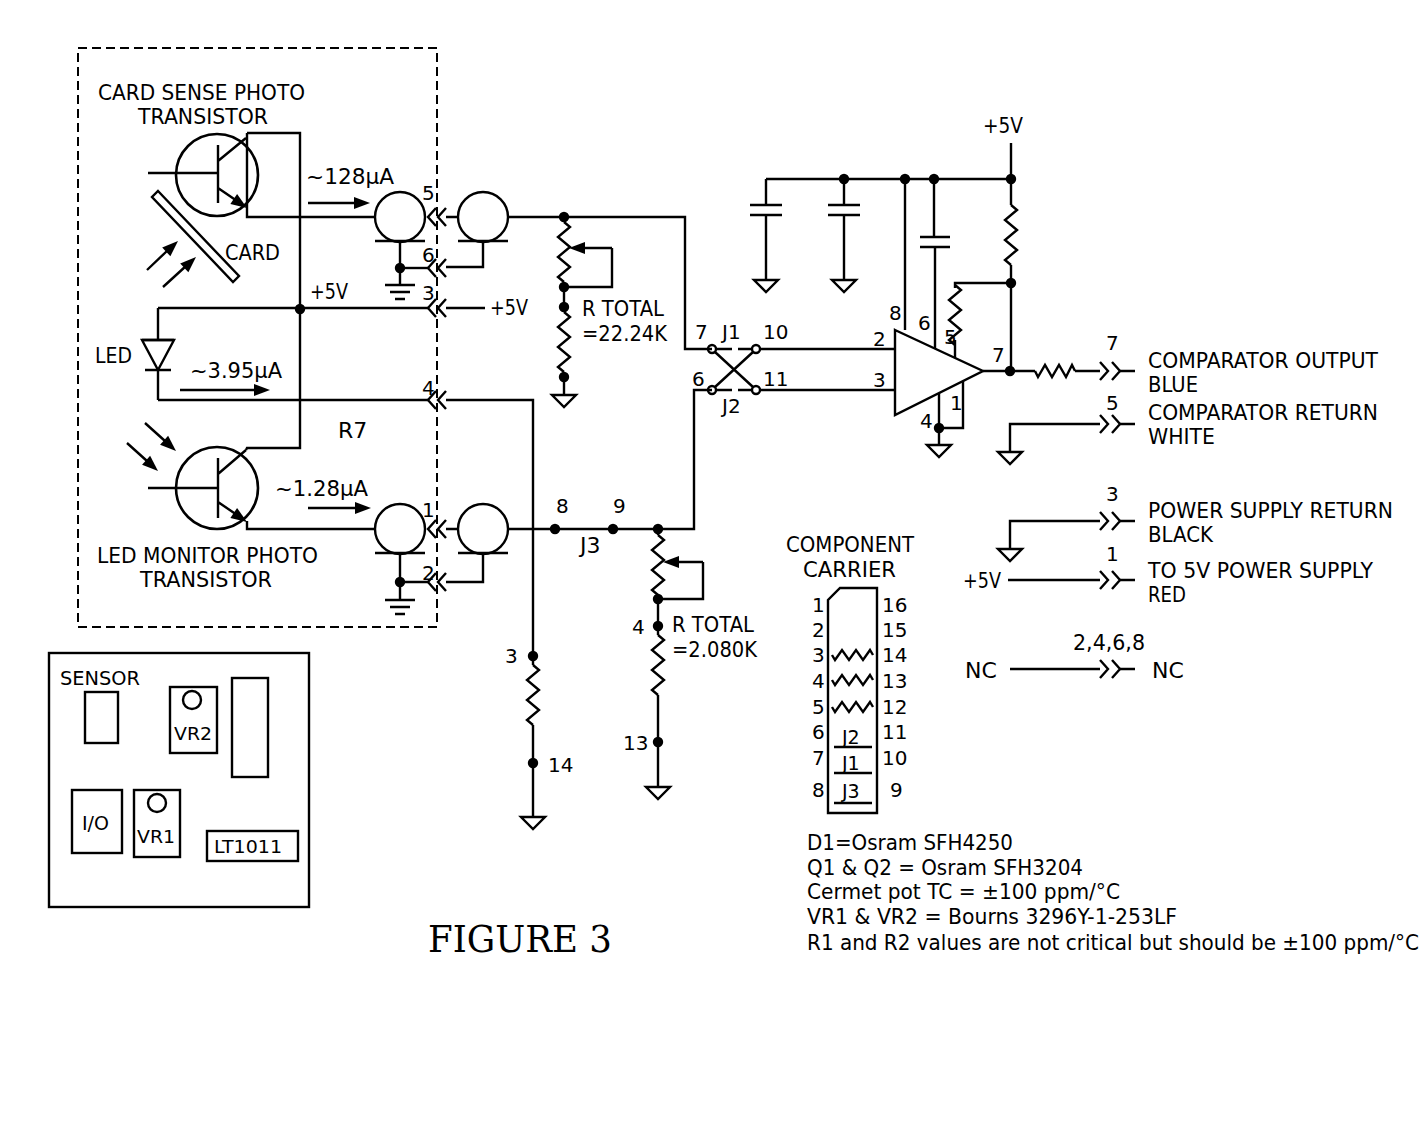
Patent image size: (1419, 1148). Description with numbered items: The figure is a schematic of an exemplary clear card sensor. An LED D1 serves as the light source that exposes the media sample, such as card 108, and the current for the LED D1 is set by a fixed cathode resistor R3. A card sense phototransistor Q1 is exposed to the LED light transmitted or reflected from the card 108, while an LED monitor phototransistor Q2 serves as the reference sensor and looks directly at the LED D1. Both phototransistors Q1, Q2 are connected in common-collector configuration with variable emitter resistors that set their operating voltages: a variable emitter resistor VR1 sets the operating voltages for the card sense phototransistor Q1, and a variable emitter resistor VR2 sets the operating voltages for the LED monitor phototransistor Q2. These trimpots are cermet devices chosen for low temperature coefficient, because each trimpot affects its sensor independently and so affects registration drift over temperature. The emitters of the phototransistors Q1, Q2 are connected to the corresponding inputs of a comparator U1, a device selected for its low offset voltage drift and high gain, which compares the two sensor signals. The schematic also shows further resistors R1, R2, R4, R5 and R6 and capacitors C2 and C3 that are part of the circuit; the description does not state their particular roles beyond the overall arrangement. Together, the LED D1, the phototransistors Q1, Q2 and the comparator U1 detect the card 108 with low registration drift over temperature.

The card 108 is at (152, 197).
The card sense phototransistor Q1 is at (202, 175).
The LED monitor phototransistor Q2 is at (217, 473).
The LED D1 is at (176, 354).
The comparator U1 is at (935, 322).
The variable emitter resistor VR1 is at (566, 254).
The variable emitter resistor VR2 is at (655, 566).
The resistor R1 1.24K R1 is at (518, 347).
The resistor R2 1.24K R2 is at (609, 699).
The fixed cathode resistor R3 is at (517, 740).
The resistor R4 1K R4 is at (1029, 231).
The resistor R5 1M R5 is at (980, 314).
The resistor R6 91 R6 is at (1055, 373).
The capacitor C2 .0027 C2 is at (962, 222).
The capacitors C3 is at (775, 235).